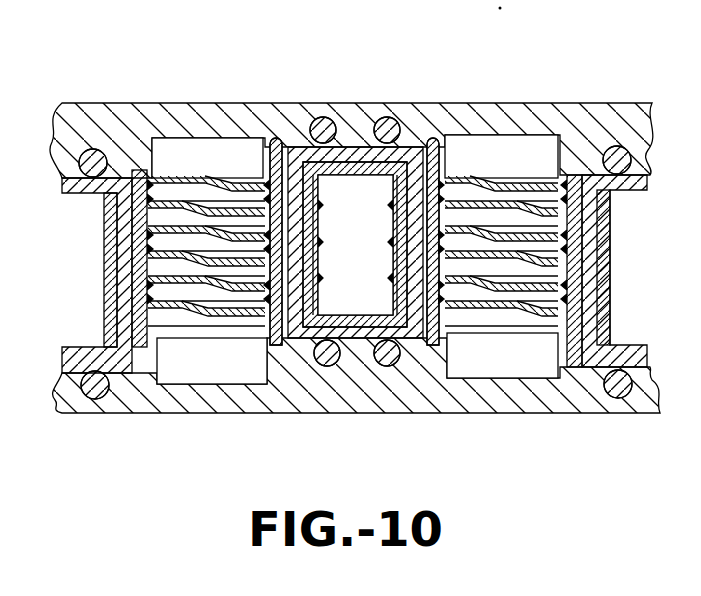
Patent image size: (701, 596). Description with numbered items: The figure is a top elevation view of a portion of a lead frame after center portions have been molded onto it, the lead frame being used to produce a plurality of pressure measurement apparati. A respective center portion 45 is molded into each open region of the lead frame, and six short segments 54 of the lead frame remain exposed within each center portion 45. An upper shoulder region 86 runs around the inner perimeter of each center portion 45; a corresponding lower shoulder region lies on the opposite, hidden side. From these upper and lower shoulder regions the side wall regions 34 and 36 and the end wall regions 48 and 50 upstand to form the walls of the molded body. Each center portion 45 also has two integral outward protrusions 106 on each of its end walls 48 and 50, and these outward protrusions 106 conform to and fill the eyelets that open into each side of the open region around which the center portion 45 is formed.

The side wall region 34 is at (270, 242).
The side wall region 36 is at (444, 250).
The center portion 45 is at (422, 122).
The end wall region 48 is at (363, 122).
The end wall region 50 is at (362, 340).
The short segment 54 is at (398, 205).
The upper shoulder region 86 is at (102, 230).
The outward protrusion 106 is at (397, 122).